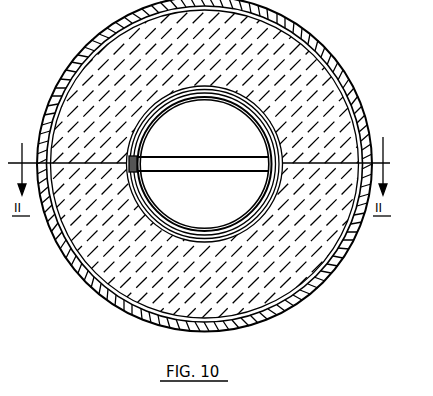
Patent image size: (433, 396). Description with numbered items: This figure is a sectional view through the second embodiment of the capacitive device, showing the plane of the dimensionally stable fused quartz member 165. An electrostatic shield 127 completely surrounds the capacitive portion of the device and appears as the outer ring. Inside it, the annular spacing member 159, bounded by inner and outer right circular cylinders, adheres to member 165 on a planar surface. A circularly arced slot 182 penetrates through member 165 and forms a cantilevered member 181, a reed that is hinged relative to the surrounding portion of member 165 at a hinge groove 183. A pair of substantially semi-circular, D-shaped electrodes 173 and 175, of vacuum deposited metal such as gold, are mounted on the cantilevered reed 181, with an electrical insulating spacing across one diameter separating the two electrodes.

The electrostatic shield 127 is at (347, 72).
The annular spacing member 159 is at (100, 266).
The member 165 is at (267, 211).
The electrode 173 is at (217, 146).
The electrode 175 is at (222, 205).
The cantilevered member 181 is at (250, 143).
The circularly arced slot 182 is at (232, 106).
The hinge groove 183 is at (126, 163).